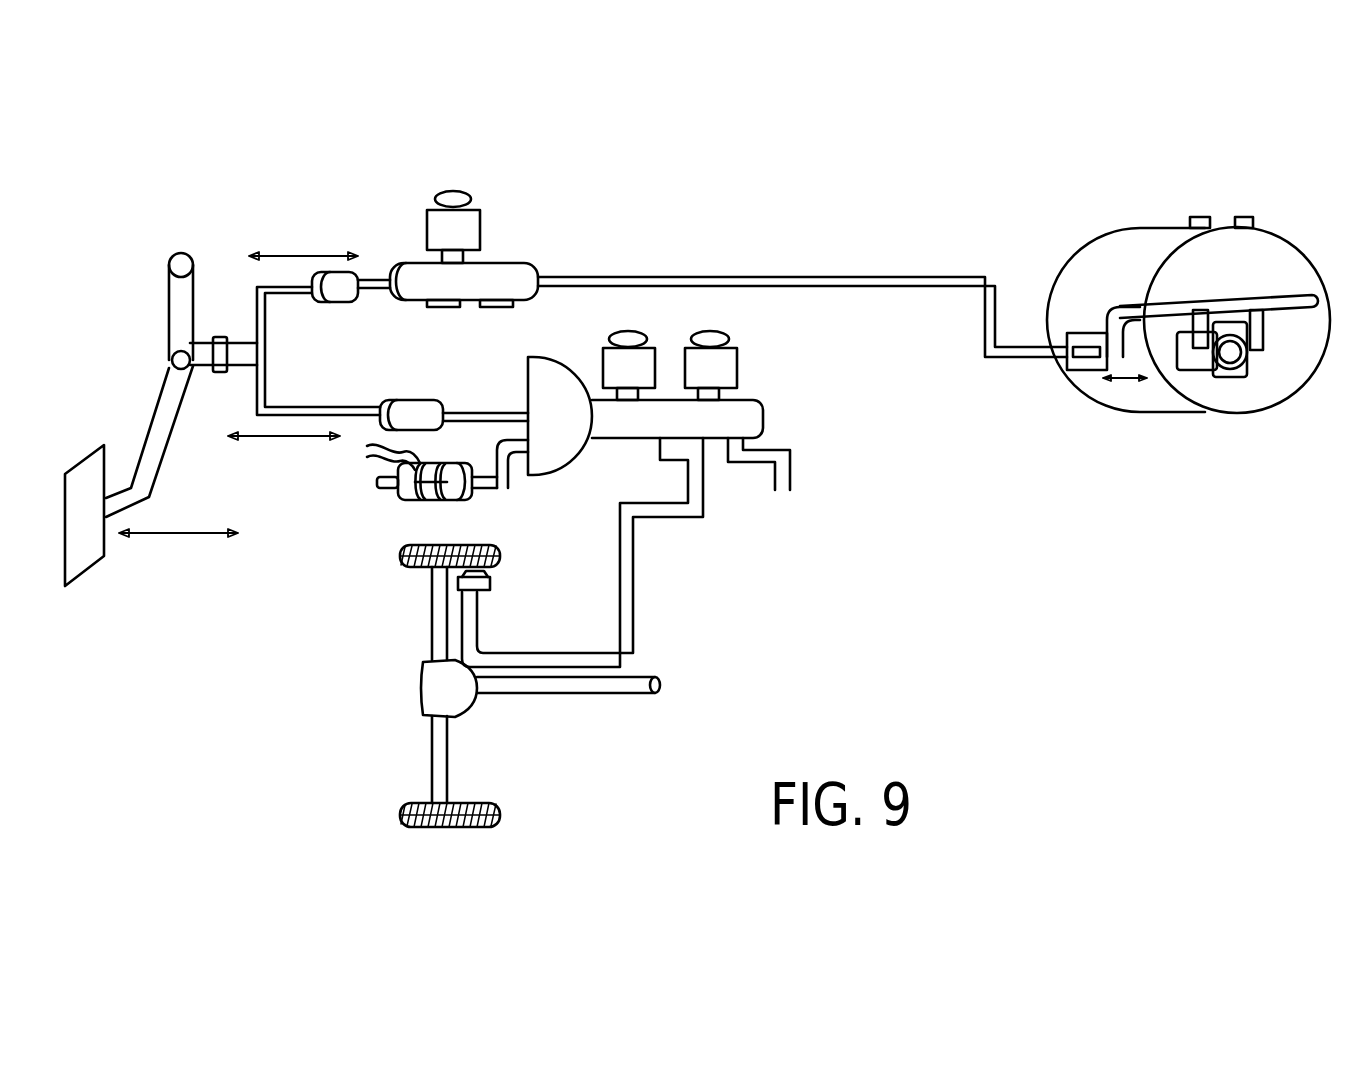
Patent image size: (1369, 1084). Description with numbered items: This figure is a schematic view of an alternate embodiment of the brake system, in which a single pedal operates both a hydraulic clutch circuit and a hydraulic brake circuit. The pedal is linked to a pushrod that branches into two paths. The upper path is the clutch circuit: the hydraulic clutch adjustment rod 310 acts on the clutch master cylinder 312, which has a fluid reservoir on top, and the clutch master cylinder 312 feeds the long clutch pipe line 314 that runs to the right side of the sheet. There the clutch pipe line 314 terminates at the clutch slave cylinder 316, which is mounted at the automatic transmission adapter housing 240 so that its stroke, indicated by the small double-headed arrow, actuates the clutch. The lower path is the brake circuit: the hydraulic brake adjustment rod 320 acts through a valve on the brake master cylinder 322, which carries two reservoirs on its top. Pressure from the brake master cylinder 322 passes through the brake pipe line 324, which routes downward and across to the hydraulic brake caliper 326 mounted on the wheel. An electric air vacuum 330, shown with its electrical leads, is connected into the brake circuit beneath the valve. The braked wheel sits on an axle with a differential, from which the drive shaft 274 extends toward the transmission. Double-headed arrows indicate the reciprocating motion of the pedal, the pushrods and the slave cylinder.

The hydraulic clutch adjustment rod 310 is at (358, 272).
The clutch master cylinder 312 is at (519, 265).
The clutch pipe line 314 is at (752, 277).
The clutch slave cylinder 316 is at (1087, 372).
The automatic transmission adapter housing 240 is at (1152, 414).
The hydraulic brake adjustment rod 320 is at (405, 400).
The brake master cylinder 322 is at (765, 418).
The brake pipe line 324 is at (635, 600).
The hydraulic brake caliper 326 is at (490, 585).
The electric air vacuum 330 is at (410, 500).
The drive shaft 274 is at (583, 696).